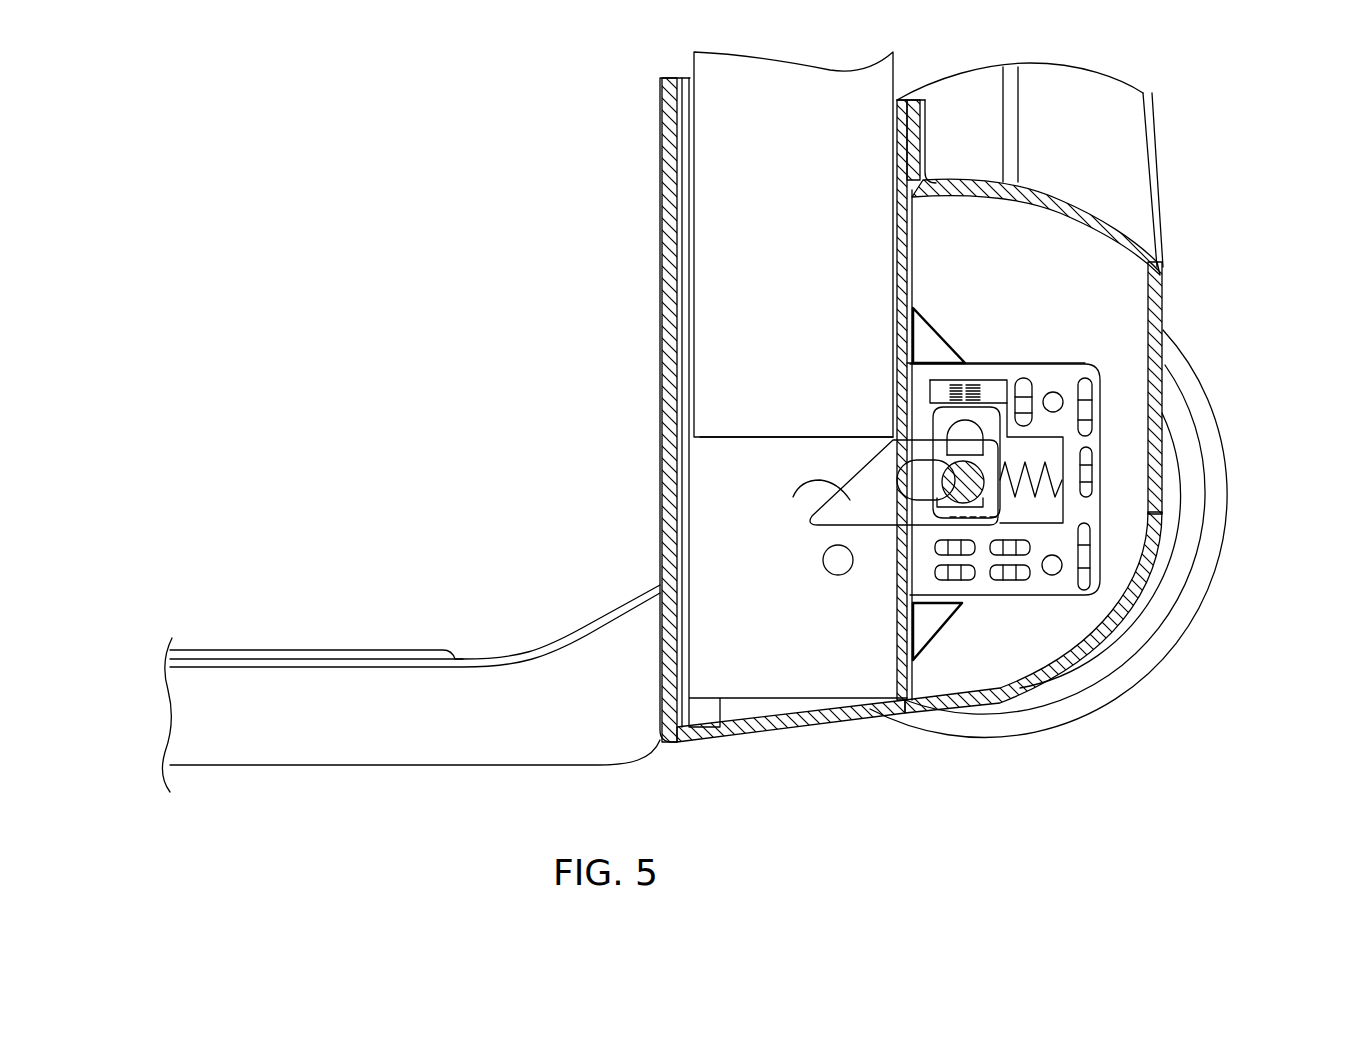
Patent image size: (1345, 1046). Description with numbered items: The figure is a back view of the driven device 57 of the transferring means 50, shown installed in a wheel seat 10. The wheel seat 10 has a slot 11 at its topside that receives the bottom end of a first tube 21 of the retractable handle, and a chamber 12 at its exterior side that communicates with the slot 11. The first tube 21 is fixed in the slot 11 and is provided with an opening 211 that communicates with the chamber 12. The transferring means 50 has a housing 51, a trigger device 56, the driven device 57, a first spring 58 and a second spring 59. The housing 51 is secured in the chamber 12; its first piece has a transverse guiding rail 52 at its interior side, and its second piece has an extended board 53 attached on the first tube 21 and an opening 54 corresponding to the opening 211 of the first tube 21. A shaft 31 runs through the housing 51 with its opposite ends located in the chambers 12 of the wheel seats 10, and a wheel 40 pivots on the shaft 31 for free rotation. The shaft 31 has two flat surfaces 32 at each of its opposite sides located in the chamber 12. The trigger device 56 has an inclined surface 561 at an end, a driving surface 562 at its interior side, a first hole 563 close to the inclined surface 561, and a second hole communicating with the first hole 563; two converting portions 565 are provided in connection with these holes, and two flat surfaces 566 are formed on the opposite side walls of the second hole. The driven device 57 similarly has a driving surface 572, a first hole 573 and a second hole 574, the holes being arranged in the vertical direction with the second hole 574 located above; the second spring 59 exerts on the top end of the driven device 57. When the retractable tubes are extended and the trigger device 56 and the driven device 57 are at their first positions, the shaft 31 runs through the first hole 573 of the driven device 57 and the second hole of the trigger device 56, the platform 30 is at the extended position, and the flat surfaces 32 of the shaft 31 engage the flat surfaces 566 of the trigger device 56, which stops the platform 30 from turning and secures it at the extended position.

The wheel seat 10 is at (673, 103).
The slot 11 is at (683, 540).
The chamber 12 is at (1013, 218).
The first tube 21 is at (733, 178).
The opening 211 is at (893, 423).
The platform 30 is at (256, 650).
The shaft 31 is at (1043, 510).
The flat surfaces 32 is at (980, 500).
The wheel 40 is at (1172, 644).
The transferring means 50 is at (975, 380).
The housing 51 is at (1105, 548).
The transverse guiding rail 52 is at (1098, 653).
The extended board 53 is at (965, 400).
The opening 54 is at (907, 397).
The trigger device 56 is at (870, 527).
The inclined surface 561 is at (793, 497).
The driving surface 562 is at (840, 575).
The first hole 563 is at (890, 505).
The converting portions 565 is at (960, 503).
The flat surfaces 566 is at (1013, 644).
The driven device 57 is at (898, 368).
The driving surface 572 is at (995, 420).
The first hole 573 is at (985, 470).
The second hole 574 is at (960, 445).
The first spring 58 is at (1060, 498).
The second spring 59 is at (975, 352).